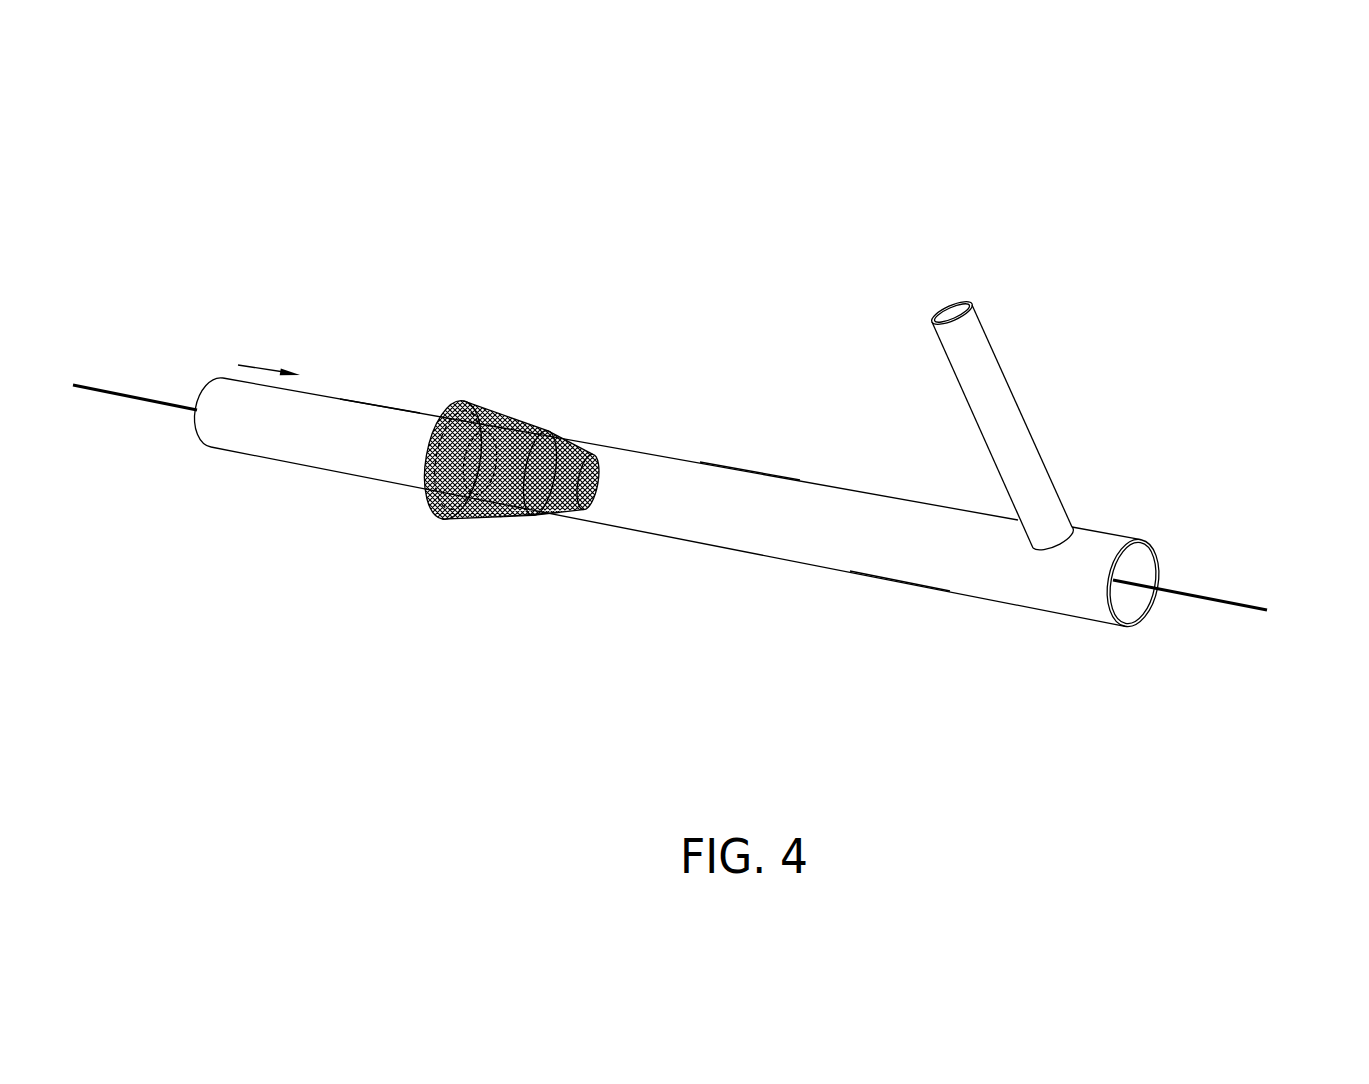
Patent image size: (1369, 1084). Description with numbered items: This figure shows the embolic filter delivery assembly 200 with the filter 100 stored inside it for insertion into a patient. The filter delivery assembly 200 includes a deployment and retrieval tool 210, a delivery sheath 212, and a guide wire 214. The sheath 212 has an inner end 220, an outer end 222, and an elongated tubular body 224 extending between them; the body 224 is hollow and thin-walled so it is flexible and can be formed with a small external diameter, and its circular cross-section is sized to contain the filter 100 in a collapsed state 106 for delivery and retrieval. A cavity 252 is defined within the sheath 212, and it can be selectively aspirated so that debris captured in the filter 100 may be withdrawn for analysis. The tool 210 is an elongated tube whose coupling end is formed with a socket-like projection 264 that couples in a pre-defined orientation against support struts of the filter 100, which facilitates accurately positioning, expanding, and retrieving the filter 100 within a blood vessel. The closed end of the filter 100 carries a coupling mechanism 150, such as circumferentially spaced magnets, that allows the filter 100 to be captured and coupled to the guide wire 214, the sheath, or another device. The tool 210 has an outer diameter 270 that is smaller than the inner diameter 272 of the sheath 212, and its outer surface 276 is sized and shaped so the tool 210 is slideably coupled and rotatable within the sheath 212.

The embolic filter delivery assembly 200 is at (402, 200).
The deployment and retrieval tool 210 is at (390, 478).
The delivery sheath 212 is at (922, 573).
The guide wire 214 is at (1222, 598).
The inner end 220 is at (1148, 625).
The outer end 222 is at (523, 517).
The elongated tubular body 224 is at (763, 488).
The cavity 252 is at (1165, 554).
The socket-like projection 264 is at (485, 490).
The outer diameter 270 is at (313, 533).
The inner diameter 272 is at (1112, 687).
The outer surface 276 is at (385, 415).
The filter 100 is at (482, 403).
The collapsed state 106 is at (556, 408).
The coupling mechanism 150 is at (605, 434).